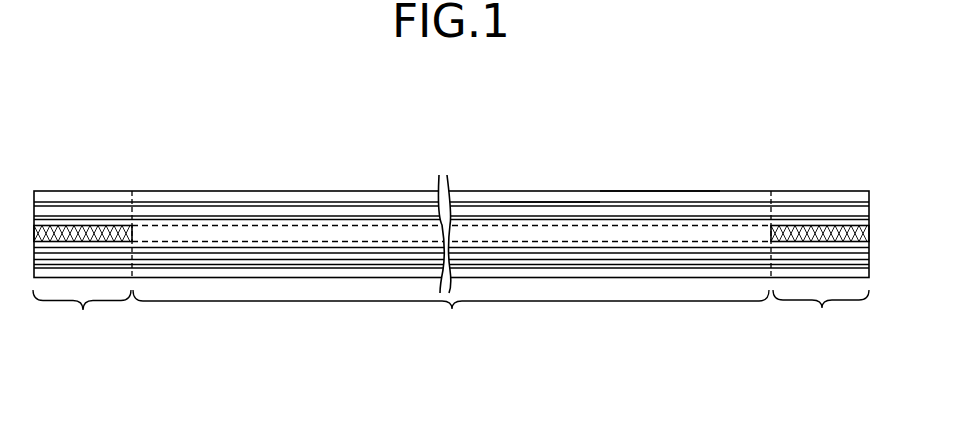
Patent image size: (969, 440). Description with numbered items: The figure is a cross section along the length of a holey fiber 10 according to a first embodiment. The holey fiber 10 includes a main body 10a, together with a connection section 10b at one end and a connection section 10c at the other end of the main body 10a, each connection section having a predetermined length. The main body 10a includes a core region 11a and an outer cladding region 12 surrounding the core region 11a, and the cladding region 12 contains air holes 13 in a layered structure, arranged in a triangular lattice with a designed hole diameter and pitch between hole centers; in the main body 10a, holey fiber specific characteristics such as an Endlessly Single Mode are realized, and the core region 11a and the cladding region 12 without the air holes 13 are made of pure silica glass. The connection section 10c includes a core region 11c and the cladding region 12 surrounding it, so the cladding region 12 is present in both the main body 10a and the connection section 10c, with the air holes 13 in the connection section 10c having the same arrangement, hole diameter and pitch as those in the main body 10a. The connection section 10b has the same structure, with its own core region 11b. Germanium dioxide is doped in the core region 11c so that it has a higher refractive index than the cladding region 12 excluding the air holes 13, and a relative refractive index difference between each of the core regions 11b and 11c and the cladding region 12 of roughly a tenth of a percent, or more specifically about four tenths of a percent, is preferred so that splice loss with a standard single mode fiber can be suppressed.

The holey fiber 10 is at (637, 138).
The main body 10a is at (451, 316).
The connection section 10b is at (82, 267).
The connection section 10c is at (820, 266).
The core region 11a is at (313, 225).
The core region 11b is at (78, 225).
The core region 11c is at (808, 225).
The cladding region 12 is at (543, 197).
The air holes 13 is at (669, 200).